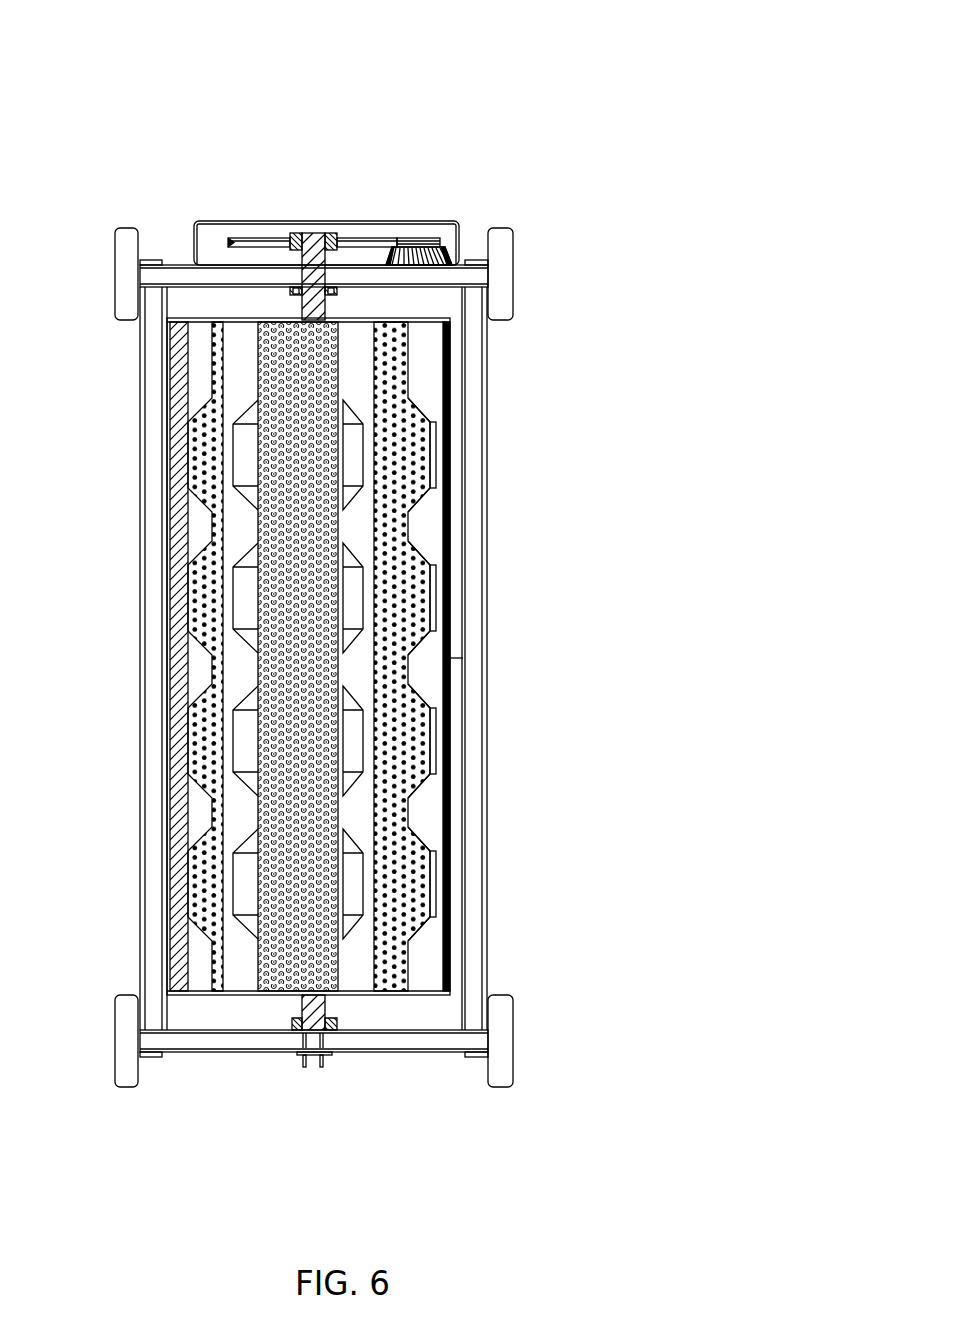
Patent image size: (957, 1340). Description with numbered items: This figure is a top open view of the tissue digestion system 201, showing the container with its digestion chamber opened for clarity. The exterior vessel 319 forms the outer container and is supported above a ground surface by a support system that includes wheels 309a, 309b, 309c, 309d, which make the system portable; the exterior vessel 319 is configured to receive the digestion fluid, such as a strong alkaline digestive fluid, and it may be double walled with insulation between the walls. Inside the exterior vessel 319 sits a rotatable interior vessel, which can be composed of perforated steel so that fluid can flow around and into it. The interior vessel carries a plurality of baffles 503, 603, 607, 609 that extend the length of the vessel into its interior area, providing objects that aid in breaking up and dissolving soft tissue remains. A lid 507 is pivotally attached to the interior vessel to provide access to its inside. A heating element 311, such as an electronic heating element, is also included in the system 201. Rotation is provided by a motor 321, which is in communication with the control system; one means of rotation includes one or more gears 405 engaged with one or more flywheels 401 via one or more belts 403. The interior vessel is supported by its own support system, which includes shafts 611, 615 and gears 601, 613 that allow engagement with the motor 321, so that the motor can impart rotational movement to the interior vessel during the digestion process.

The tissue digestion system 201 is at (684, 100).
The wheel 309a is at (128, 1087).
The wheel 309b is at (500, 1087).
The wheel 309c is at (512, 247).
The wheel 309d is at (128, 228).
The heating element 311 is at (316, 1057).
The exterior vessel 319 is at (487, 658).
The motor 321 is at (450, 260).
The flywheel 401 is at (301, 233).
The belt 403 is at (233, 242).
The gear 405 is at (432, 238).
The baffle 503 is at (437, 456).
The lid 507 is at (410, 372).
The gear 601 is at (337, 291).
The baffle 603 is at (437, 598).
The baffle 607 is at (437, 741).
The baffle 609 is at (437, 884).
The shaft 611 is at (327, 1007).
The gear 613 is at (297, 1020).
The shaft 615 is at (333, 257).